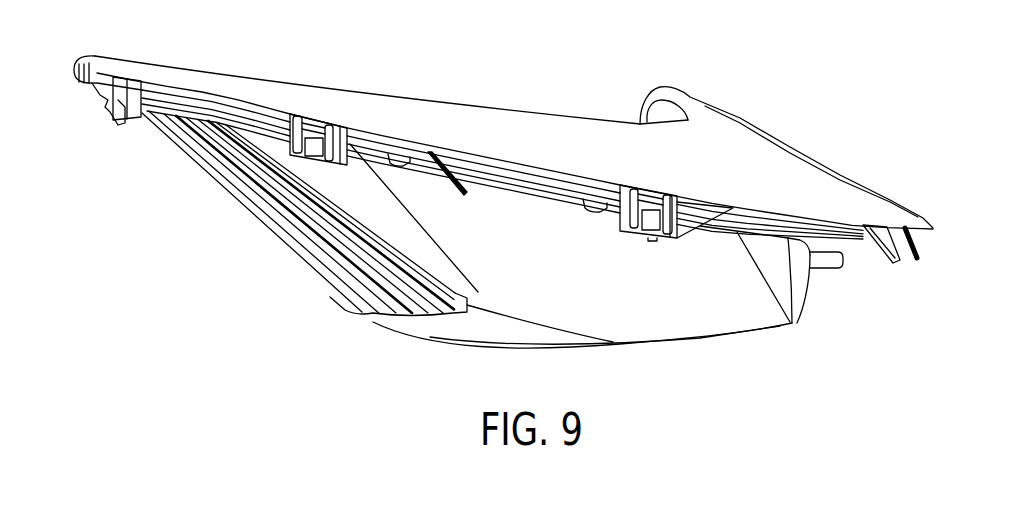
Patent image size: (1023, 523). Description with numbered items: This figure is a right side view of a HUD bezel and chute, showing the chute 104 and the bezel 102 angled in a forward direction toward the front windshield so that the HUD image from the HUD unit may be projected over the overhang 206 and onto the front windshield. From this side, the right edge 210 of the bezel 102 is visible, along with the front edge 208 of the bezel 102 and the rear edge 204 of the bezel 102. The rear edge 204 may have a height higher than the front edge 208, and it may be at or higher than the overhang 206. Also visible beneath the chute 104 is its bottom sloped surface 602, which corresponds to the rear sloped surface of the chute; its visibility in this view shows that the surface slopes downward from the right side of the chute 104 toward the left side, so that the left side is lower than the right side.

The bezel 102 is at (322, 93).
The chute 104 is at (487, 273).
The rear edge 204 is at (73, 64).
The overhang 206 is at (814, 89).
The front edge 208 is at (933, 228).
The right edge 210 is at (540, 128).
The bottom sloped surface 602 is at (375, 300).